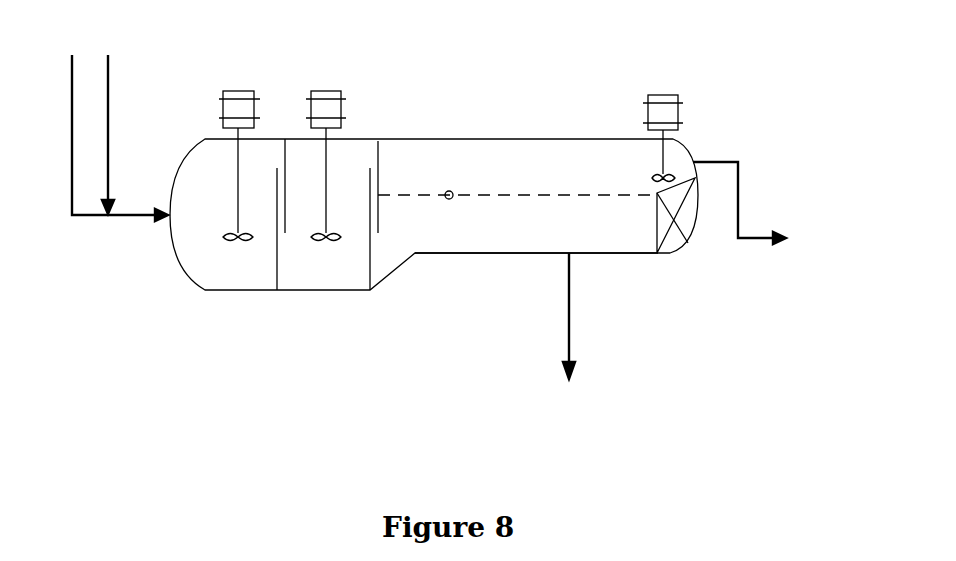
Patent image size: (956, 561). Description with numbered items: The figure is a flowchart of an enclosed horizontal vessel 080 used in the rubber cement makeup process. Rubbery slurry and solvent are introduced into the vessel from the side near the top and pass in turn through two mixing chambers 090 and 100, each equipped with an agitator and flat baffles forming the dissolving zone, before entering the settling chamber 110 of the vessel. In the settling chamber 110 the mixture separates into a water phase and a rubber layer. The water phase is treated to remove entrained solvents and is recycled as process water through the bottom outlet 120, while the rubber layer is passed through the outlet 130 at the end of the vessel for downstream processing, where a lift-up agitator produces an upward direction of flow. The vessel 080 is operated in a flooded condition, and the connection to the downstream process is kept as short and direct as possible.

The enclosed horizontal vessel 080 is at (486, 195).
The first mixing chamber 090 is at (247, 251).
The second mixing chamber 100 is at (337, 251).
The settling chamber 110 is at (499, 212).
The outlet 120 is at (570, 331).
The outlet 130 is at (760, 206).